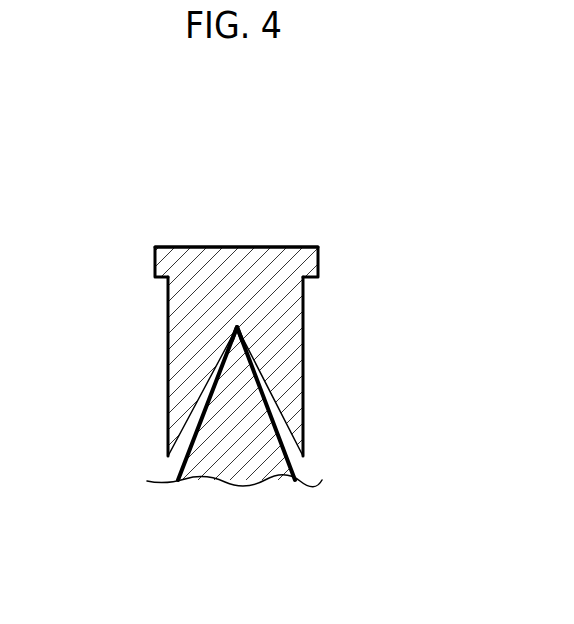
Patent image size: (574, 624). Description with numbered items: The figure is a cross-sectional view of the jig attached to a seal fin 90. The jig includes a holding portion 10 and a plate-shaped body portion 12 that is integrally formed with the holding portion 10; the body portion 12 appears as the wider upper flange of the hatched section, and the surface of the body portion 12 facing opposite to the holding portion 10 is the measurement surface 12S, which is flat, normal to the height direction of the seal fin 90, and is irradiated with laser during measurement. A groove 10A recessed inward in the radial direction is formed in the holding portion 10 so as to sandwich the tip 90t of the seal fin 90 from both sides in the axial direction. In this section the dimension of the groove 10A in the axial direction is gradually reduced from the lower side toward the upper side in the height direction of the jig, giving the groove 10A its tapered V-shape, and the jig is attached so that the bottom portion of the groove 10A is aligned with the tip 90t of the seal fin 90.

The holding portion 10 is at (289, 329).
The groove 10A is at (330, 406).
The body portion 12 is at (297, 257).
The measurement surface 12S is at (187, 247).
The seal fin 90 is at (233, 457).
The tip of the seal fin 90t is at (236, 328).